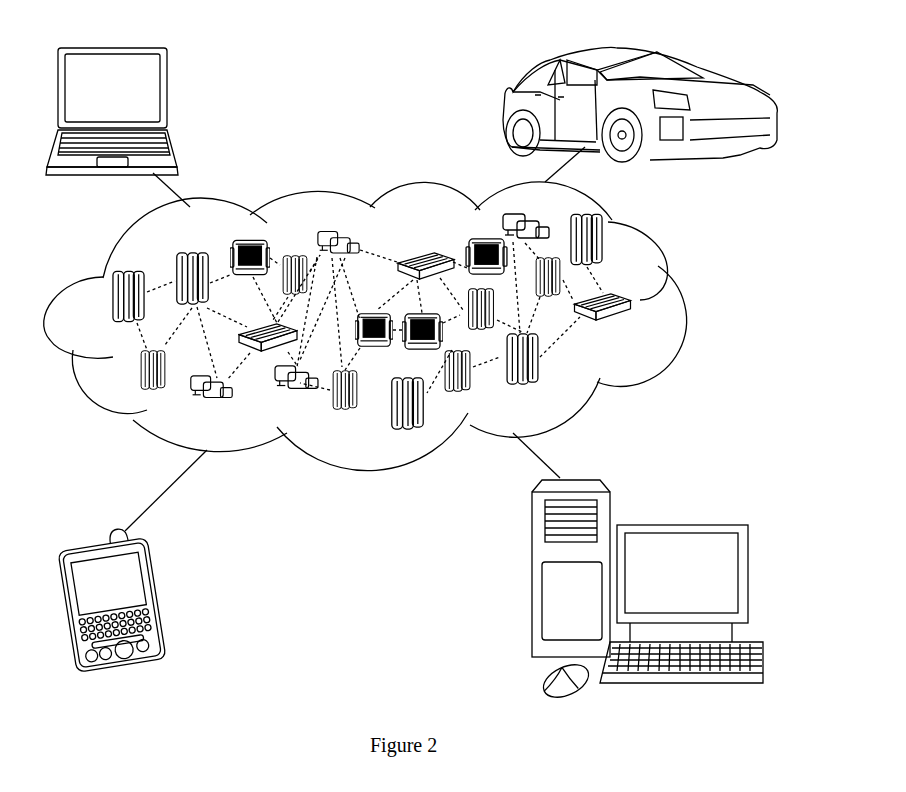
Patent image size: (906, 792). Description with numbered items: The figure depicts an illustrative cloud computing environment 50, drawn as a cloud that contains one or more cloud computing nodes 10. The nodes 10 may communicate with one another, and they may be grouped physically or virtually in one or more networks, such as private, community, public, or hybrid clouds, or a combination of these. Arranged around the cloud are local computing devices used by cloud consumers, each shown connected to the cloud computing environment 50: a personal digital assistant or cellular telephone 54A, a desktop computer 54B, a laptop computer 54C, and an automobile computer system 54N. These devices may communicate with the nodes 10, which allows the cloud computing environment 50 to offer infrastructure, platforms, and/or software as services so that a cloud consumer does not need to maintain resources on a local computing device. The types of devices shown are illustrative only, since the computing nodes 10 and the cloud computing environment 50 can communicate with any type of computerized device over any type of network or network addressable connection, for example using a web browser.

The cloud computing node 10 is at (642, 330).
The cloud computing environment 50 is at (682, 306).
The personal digital assistant (PDA) or cellular telephone 54A is at (157, 597).
The desktop computer 54B is at (690, 508).
The laptop computer 54C is at (167, 95).
The automobile computer system 54N is at (505, 108).